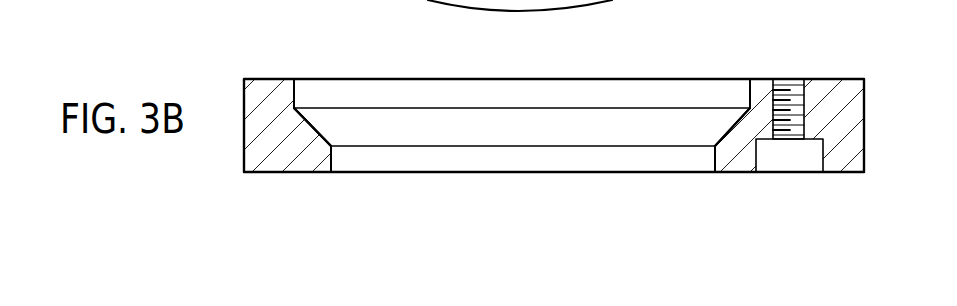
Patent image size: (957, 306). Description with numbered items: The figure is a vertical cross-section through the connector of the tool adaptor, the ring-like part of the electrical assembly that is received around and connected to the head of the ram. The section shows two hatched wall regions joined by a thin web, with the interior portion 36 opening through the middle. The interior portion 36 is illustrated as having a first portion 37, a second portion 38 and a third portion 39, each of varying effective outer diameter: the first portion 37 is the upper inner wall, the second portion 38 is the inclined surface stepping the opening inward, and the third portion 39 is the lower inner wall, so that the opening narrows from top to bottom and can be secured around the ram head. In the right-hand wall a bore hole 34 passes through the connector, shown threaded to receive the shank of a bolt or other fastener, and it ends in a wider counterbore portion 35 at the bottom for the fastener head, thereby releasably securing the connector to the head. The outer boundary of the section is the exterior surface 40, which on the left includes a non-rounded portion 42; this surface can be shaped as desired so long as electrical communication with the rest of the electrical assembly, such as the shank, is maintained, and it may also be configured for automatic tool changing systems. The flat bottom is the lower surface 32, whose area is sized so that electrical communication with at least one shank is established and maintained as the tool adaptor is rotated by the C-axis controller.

The lower surface 32 is at (284, 173).
The bore hole 34 is at (776, 92).
The counterbore portion 35 is at (756, 156).
The interior portion 36 is at (575, 138).
The first portion 37 is at (297, 92).
The second portion 38 is at (313, 127).
The third portion 39 is at (332, 162).
The exterior surface 40 is at (865, 117).
The non-rounded portion 42 is at (243, 108).